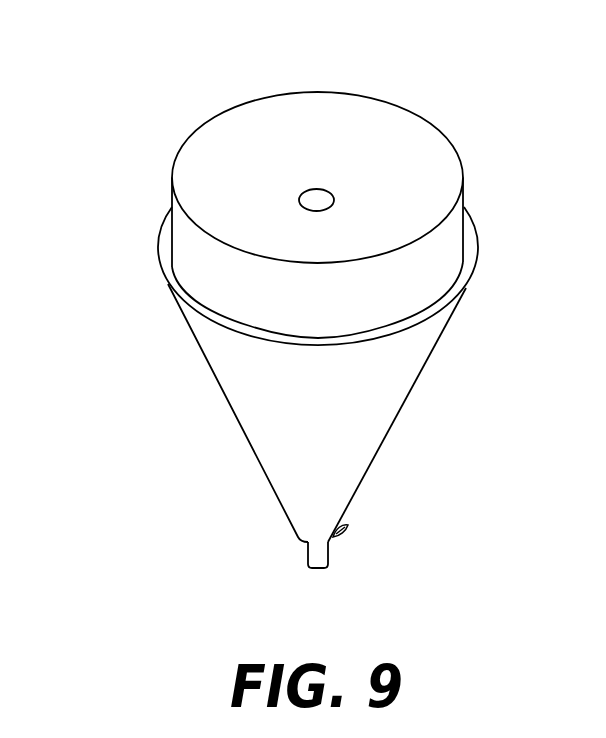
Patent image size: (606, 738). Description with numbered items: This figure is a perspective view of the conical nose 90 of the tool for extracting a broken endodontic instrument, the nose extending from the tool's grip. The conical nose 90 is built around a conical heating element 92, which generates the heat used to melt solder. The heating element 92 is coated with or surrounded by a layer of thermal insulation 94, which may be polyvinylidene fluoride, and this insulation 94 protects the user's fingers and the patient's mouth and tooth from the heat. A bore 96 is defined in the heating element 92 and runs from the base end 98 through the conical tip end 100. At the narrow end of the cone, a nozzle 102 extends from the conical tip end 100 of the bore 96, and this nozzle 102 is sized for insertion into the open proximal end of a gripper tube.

The conical nose 90 is at (131, 200).
The conical heating element 92 is at (413, 120).
The layer of thermal insulation 94 is at (168, 285).
The bore 96 is at (334, 198).
The base end 98 is at (312, 105).
The conical tip end 100 is at (300, 540).
The nozzle 102 is at (323, 558).